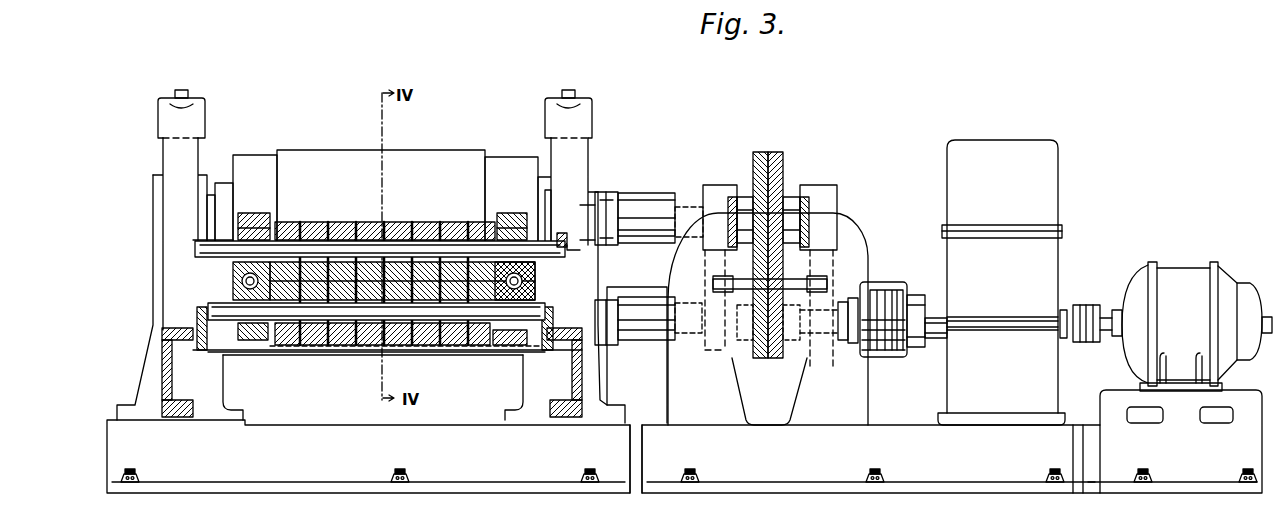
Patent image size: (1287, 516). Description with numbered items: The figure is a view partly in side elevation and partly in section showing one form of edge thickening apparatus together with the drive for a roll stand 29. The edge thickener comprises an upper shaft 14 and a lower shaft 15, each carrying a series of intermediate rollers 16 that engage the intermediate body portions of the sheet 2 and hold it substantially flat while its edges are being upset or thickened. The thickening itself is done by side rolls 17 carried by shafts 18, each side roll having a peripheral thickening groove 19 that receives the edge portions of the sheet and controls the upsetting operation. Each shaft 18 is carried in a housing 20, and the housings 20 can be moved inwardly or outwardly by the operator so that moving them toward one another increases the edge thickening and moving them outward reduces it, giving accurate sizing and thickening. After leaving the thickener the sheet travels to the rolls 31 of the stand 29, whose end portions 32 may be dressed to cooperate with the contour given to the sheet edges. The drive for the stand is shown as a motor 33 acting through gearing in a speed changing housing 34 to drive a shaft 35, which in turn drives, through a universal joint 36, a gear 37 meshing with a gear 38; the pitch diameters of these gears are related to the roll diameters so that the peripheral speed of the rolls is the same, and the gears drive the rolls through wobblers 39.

The sheet 2 is at (315, 300).
The upper shaft 14 is at (450, 250).
The lower shaft 15 is at (368, 317).
The intermediate rollers 16 is at (340, 222).
The side rolls 17 is at (233, 285).
The shafts 18 is at (197, 304).
The peripheral thickening groove 19 is at (235, 275).
The housing 20 is at (253, 215).
The roll stand 29 is at (175, 155).
The rolls 31 is at (403, 158).
The end portions 32 is at (250, 162).
The motor 33 is at (1170, 273).
The speed changing housing 34 is at (1045, 254).
The shaft 35 is at (937, 343).
The universal joint 36 is at (883, 287).
The gear 37 is at (772, 360).
The gear 38 is at (783, 165).
The wobblers 39 is at (650, 300).